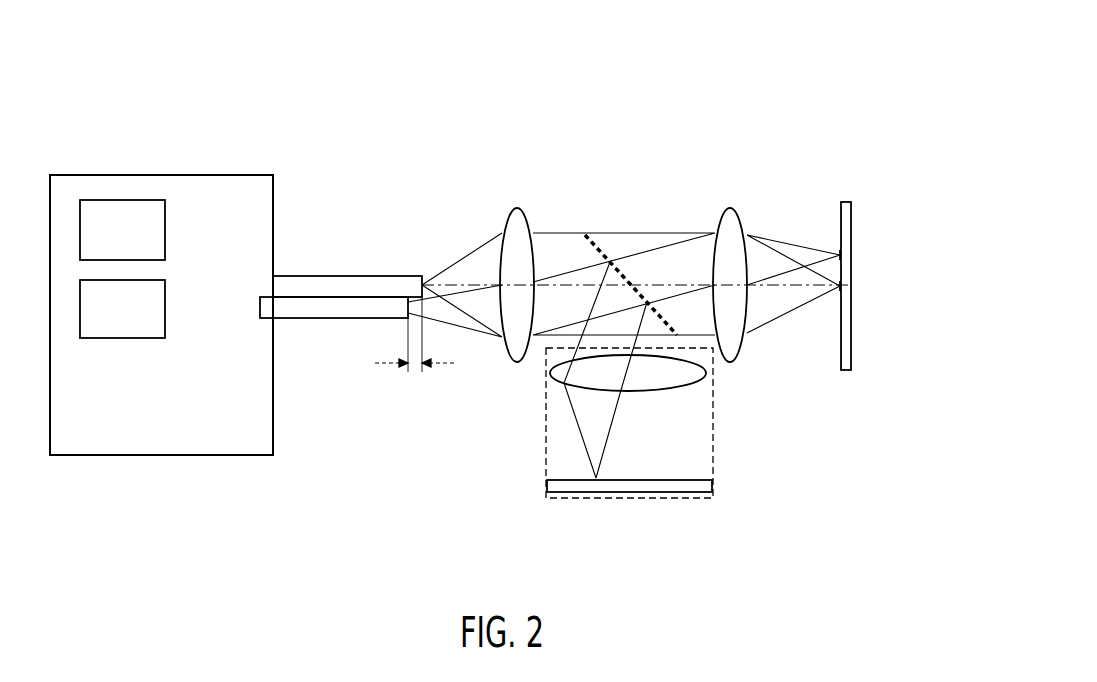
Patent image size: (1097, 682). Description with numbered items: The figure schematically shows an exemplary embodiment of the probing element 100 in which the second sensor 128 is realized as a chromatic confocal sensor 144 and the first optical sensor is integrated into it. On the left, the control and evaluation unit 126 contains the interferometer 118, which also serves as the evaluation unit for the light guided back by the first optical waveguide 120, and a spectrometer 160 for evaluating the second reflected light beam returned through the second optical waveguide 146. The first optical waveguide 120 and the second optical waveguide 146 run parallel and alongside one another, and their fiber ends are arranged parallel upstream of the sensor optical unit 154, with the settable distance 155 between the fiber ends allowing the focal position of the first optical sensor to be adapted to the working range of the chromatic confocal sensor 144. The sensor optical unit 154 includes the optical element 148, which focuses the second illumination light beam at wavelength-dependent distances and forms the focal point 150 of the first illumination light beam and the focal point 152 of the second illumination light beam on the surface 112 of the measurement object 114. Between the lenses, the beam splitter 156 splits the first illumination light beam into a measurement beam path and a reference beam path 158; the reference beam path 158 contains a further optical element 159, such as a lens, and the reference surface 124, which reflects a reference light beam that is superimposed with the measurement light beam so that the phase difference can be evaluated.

The probing element 100 is at (830, 141).
The control and evaluation unit 126 is at (157, 175).
The interferometer 118 is at (141, 243).
The spectrometer 160 is at (141, 321).
The second optical waveguide 146 is at (315, 285).
The first optical waveguide 120 is at (317, 313).
The distance between the fiber ends 155 is at (413, 367).
The optical element 148 is at (646, 242).
The sensor optical unit 154 is at (516, 208).
The beam splitter 156 is at (648, 250).
The second sensor 128 is at (670, 134).
The chromatic confocal sensor 144 is at (633, 193).
The surface 112 is at (895, 286).
The measurement object 114 is at (851, 263).
The focal point 150 is at (838, 254).
The focal point 152 is at (836, 289).
The reference beam path 158 is at (545, 457).
The further optical element 159 is at (700, 380).
The reference surface 124 is at (632, 486).